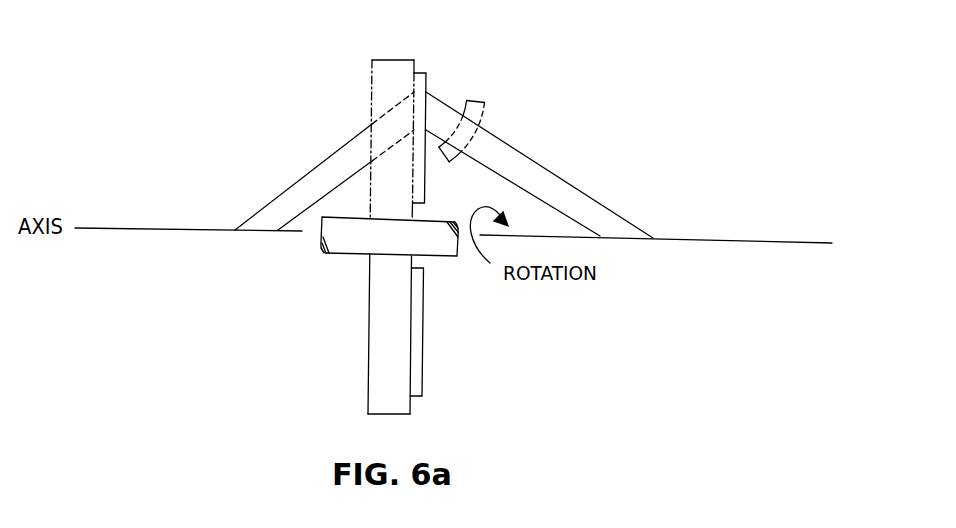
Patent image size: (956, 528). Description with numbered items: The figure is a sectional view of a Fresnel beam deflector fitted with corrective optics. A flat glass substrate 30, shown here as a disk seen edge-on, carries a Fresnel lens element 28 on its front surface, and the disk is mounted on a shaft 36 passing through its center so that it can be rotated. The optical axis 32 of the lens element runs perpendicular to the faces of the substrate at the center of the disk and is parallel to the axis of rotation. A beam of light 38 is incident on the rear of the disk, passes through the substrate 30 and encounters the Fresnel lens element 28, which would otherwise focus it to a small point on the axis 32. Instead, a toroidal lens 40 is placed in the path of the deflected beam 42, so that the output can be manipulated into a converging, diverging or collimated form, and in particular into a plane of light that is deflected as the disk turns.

The Fresnel lens element 28 is at (427, 188).
The flat glass substrate 30 is at (385, 60).
The optical axis 32 is at (137, 232).
The shaft 36 is at (433, 257).
The beam of light 38 is at (356, 138).
The toroidal lens 40 is at (473, 99).
The deflected beam 42 is at (547, 171).